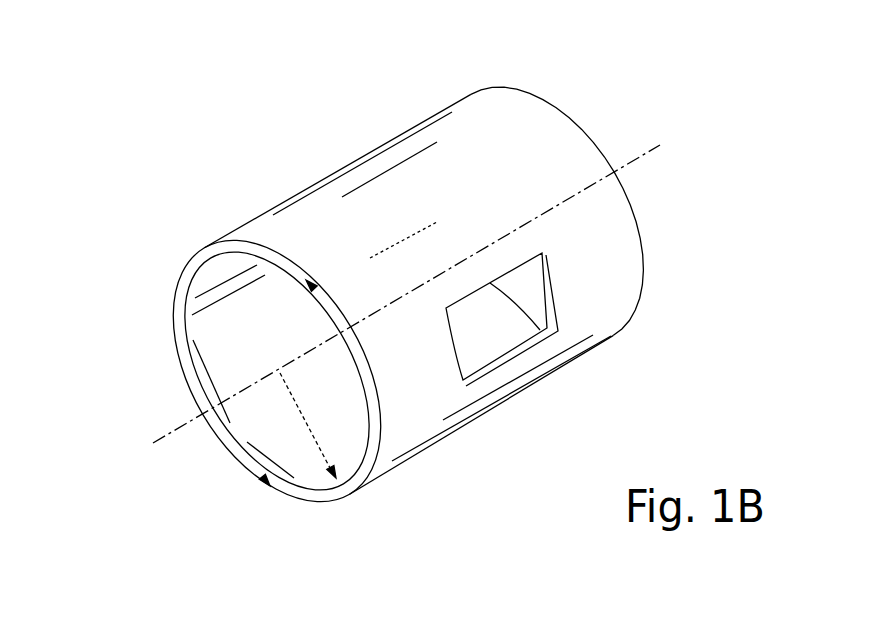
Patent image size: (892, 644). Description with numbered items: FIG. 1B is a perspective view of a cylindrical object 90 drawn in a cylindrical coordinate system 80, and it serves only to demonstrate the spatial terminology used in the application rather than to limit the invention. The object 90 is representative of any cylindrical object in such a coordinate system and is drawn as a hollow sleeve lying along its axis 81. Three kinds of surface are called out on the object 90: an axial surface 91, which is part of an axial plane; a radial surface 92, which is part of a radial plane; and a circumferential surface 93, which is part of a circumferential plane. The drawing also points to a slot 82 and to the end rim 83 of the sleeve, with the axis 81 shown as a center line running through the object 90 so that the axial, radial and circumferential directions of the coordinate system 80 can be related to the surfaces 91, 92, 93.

The cylindrical coordinate system 80 is at (580, 105).
The longitudinal axis 81 is at (165, 437).
The slot 82 is at (308, 432).
The inner bore 83 is at (177, 267).
The object 90 is at (448, 90).
The axial surface 91 is at (530, 335).
The radial surface 92 is at (292, 490).
The circumferential surface 93 is at (390, 187).